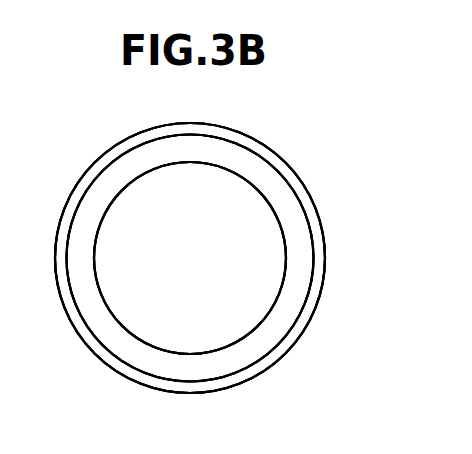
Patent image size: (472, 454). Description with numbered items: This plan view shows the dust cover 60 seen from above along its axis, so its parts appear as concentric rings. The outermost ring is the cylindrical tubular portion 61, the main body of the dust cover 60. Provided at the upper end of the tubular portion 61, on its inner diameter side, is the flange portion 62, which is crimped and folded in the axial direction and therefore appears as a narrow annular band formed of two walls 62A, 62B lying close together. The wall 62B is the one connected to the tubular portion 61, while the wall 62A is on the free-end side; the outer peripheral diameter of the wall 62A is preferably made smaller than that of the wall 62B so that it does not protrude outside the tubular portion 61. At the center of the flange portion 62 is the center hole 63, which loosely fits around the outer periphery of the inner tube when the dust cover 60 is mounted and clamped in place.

The dust cover 60 is at (106, 151).
The tubular portion 61 is at (79, 184).
The flange portion 62 is at (259, 173).
The wall 62A is at (273, 187).
The wall 62B is at (315, 223).
The center hole 63 is at (282, 238).